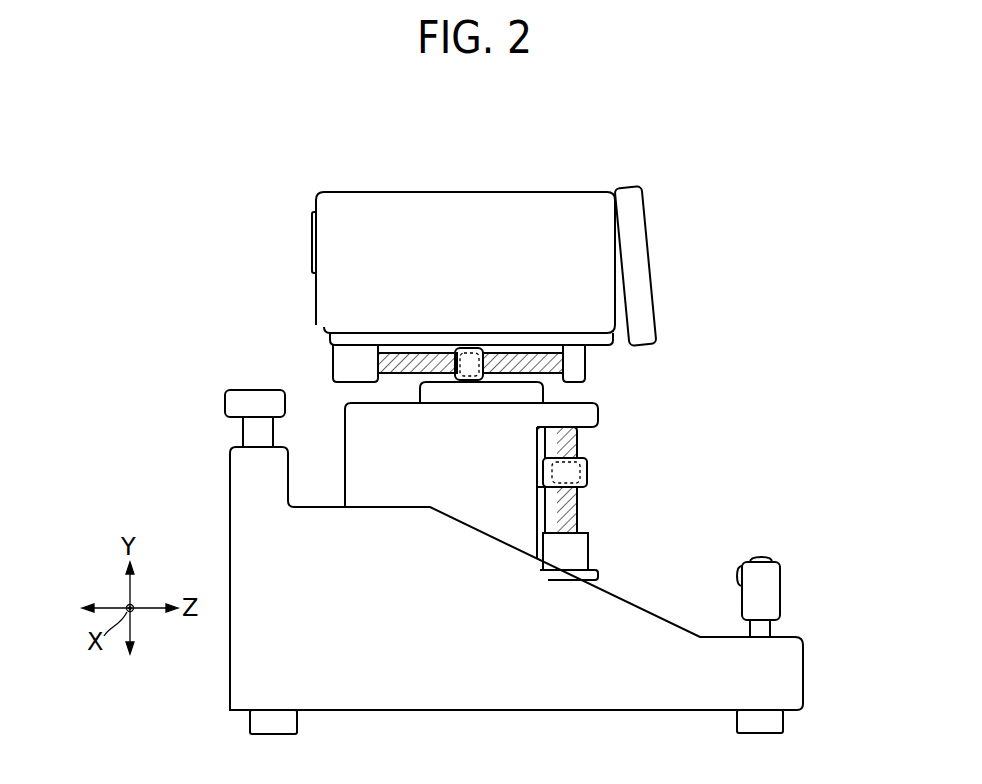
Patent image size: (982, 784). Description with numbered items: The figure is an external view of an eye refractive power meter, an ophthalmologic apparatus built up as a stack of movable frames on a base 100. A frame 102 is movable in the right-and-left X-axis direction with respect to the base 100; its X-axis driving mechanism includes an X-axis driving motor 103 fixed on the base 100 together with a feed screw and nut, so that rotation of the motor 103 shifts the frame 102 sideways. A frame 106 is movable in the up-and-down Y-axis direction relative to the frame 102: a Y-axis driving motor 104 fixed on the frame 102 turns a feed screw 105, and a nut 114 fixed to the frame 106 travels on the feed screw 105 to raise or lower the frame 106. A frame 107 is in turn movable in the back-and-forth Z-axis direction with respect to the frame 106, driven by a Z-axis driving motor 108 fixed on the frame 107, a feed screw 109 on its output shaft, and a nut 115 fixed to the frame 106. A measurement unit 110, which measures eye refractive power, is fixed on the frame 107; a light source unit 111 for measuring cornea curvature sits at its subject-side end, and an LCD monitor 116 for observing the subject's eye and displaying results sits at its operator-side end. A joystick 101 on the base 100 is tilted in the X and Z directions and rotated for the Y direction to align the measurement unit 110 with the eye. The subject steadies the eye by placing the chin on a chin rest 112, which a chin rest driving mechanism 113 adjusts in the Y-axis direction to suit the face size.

The base 100 is at (512, 711).
The joystick 101 is at (772, 590).
The frame 102 is at (362, 436).
The X-axis driving motor 103 is at (372, 560).
The Y-axis driving motor 104 is at (584, 550).
The feed screw 105 is at (579, 505).
The frame 106 is at (540, 392).
The frame 107 is at (577, 360).
The Z-axis driving motor 108 is at (333, 358).
The feed screw 109 is at (410, 353).
The measurement unit 110 is at (414, 200).
The light source unit 111 is at (313, 245).
The chin rest 112 is at (225, 398).
The chin rest driving mechanism 113 is at (241, 540).
The nut 114 is at (580, 470).
The nut 115 is at (468, 350).
The LCD monitor 116 is at (641, 262).